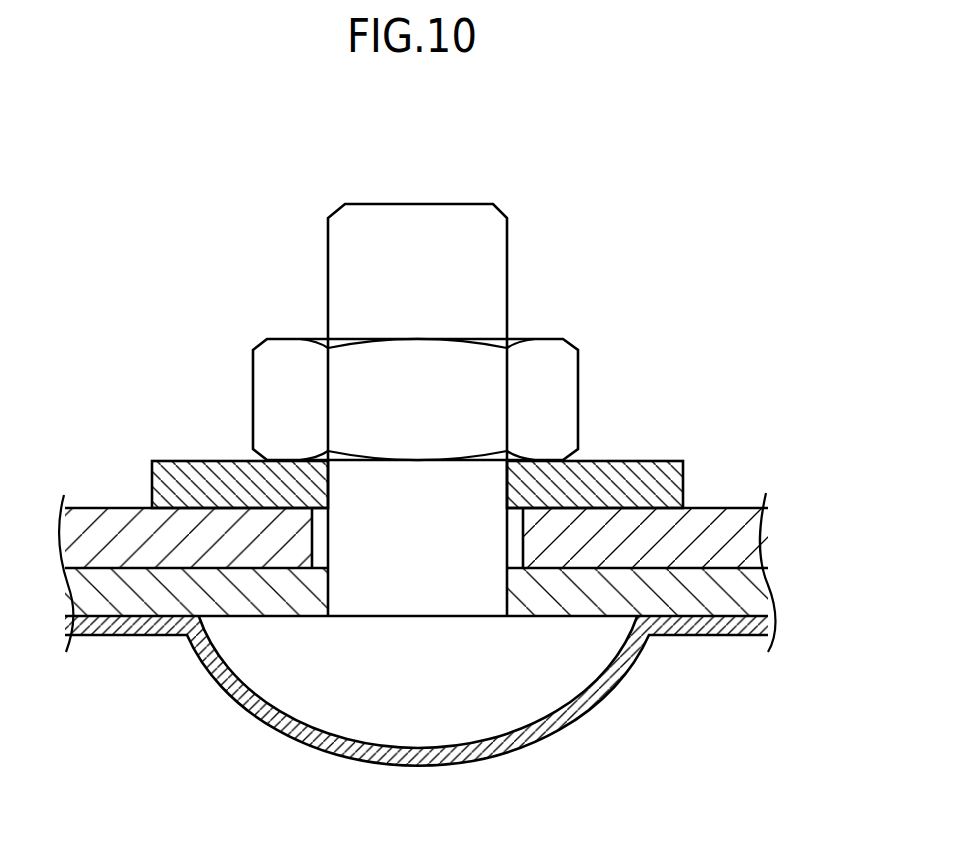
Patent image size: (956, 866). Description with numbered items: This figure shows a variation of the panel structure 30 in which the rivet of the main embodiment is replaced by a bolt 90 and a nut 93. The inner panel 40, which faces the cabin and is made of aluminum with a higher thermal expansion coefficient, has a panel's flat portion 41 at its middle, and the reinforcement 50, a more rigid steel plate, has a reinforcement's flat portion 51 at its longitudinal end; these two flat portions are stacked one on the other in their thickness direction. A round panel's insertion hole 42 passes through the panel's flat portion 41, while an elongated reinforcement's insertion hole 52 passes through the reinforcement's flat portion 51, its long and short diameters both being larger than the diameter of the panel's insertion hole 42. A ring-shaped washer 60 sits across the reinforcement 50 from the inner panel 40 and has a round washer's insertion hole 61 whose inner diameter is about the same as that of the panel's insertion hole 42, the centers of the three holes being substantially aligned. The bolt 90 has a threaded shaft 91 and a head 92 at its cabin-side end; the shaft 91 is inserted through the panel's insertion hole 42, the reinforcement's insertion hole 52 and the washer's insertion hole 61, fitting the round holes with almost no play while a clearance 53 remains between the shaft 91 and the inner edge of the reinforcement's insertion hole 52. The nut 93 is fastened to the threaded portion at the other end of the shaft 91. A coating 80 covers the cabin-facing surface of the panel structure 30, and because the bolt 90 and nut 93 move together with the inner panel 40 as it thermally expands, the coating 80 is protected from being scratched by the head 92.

The panel structure 30 is at (790, 430).
The inner panel 40 is at (129, 624).
The panel's flat portion 41 is at (725, 603).
The panel's insertion hole 42 is at (330, 588).
The reinforcement 50 is at (127, 504).
The reinforcement's flat portion 51 is at (735, 520).
The reinforcement's insertion hole 52 is at (315, 540).
The clearance 53 is at (517, 537).
The washer 60 is at (197, 455).
The washer's insertion hole 61 is at (505, 490).
The coating 80 is at (533, 733).
The bolt 90 is at (485, 199).
The shaft 91 is at (436, 722).
The head 92 is at (417, 215).
The nut 93 is at (563, 408).